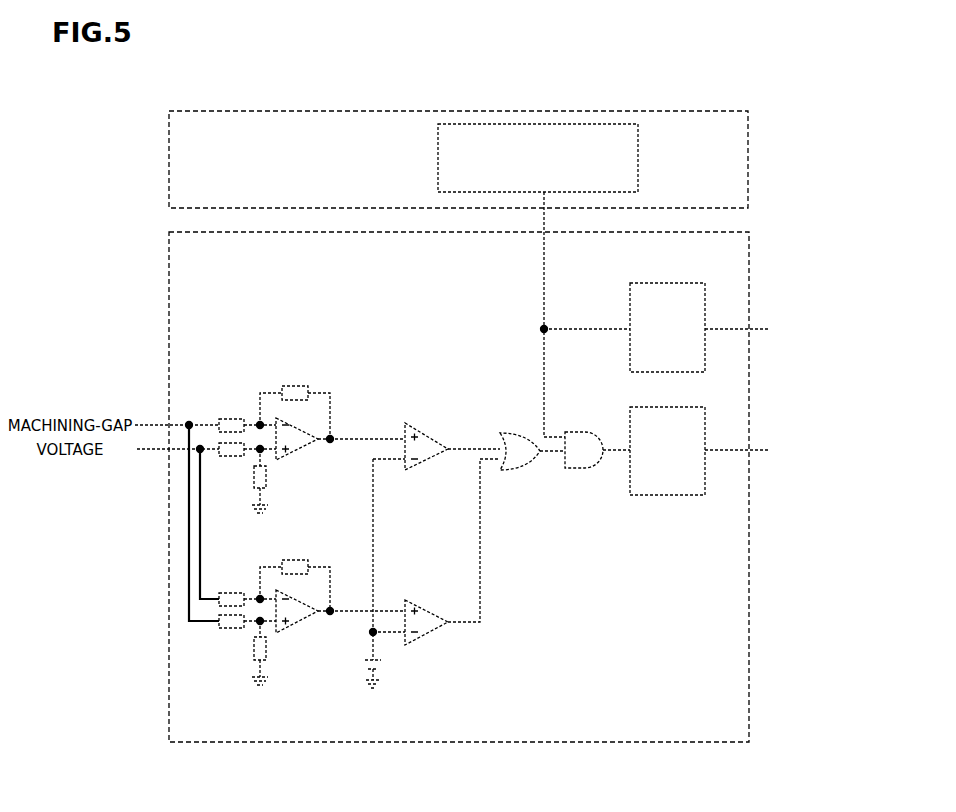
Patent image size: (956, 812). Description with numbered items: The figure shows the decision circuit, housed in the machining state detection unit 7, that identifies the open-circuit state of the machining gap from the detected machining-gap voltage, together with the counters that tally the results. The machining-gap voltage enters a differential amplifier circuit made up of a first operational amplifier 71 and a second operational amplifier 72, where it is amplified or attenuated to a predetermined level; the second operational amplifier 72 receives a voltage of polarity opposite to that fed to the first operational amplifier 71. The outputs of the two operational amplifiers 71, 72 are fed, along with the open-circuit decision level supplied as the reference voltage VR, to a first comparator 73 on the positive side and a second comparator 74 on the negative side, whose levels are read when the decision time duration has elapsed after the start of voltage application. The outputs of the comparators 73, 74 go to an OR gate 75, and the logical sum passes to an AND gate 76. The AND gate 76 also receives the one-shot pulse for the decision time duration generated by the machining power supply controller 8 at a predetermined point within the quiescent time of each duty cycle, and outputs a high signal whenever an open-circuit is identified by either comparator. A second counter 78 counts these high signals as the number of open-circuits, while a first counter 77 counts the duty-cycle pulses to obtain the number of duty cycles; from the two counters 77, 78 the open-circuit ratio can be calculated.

The machining state detection unit 7 is at (420, 743).
The machining power supply controller 8 is at (410, 106).
The first operational amplifier 71 is at (276, 449).
The second operational amplifier 72 is at (276, 622).
The first comparator 73 is at (415, 435).
The second comparator 74 is at (415, 581).
The OR gate 75 is at (532, 467).
The AND gate 76 is at (586, 346).
The first counter 77 is at (705, 283).
The second counter 78 is at (705, 407).